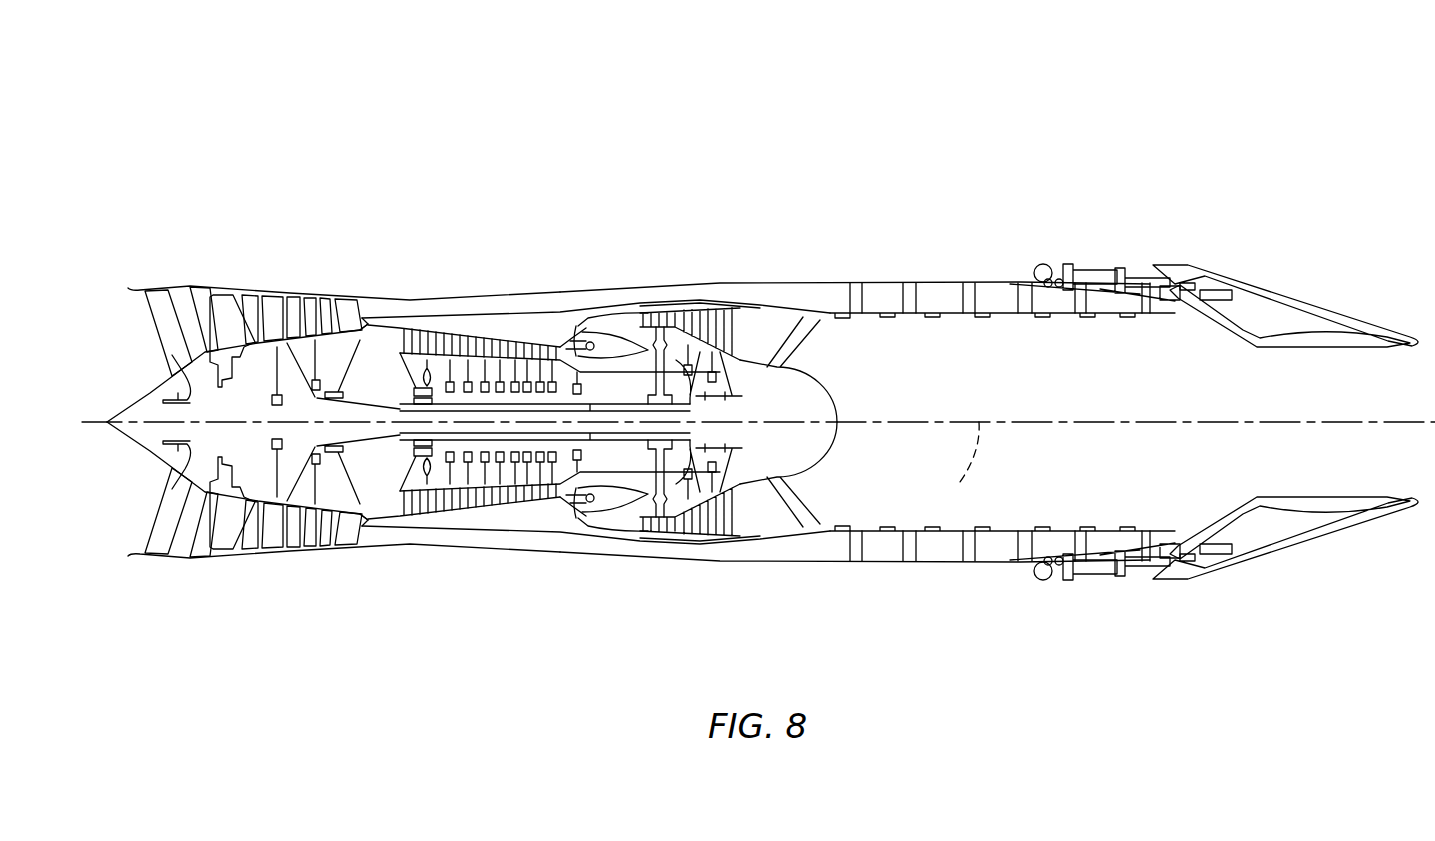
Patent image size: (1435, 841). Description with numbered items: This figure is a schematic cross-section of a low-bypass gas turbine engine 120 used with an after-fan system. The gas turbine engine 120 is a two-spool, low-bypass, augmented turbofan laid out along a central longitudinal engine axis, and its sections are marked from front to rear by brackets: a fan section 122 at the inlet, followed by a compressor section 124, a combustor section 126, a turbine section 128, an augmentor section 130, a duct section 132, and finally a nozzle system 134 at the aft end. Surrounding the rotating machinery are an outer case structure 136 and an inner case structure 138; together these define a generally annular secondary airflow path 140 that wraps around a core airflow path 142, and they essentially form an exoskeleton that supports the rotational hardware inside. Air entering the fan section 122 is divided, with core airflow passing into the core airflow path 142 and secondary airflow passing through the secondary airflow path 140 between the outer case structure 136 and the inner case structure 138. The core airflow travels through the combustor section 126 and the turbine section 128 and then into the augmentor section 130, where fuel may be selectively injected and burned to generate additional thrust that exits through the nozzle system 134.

The gas turbine engine 120 is at (1062, 107).
The fan section 122 is at (133, 217).
The compressor section 124 is at (570, 217).
The combustor section 126 is at (652, 217).
The turbine section 128 is at (735, 217).
The augmentor section 130 is at (880, 217).
The duct section 132 is at (1158, 217).
The nozzle system 134 is at (1425, 217).
The outer case structure 136 is at (715, 564).
The inner case structure 138 is at (488, 512).
The secondary airflow path 140 is at (435, 537).
The core airflow path 142 is at (358, 518).